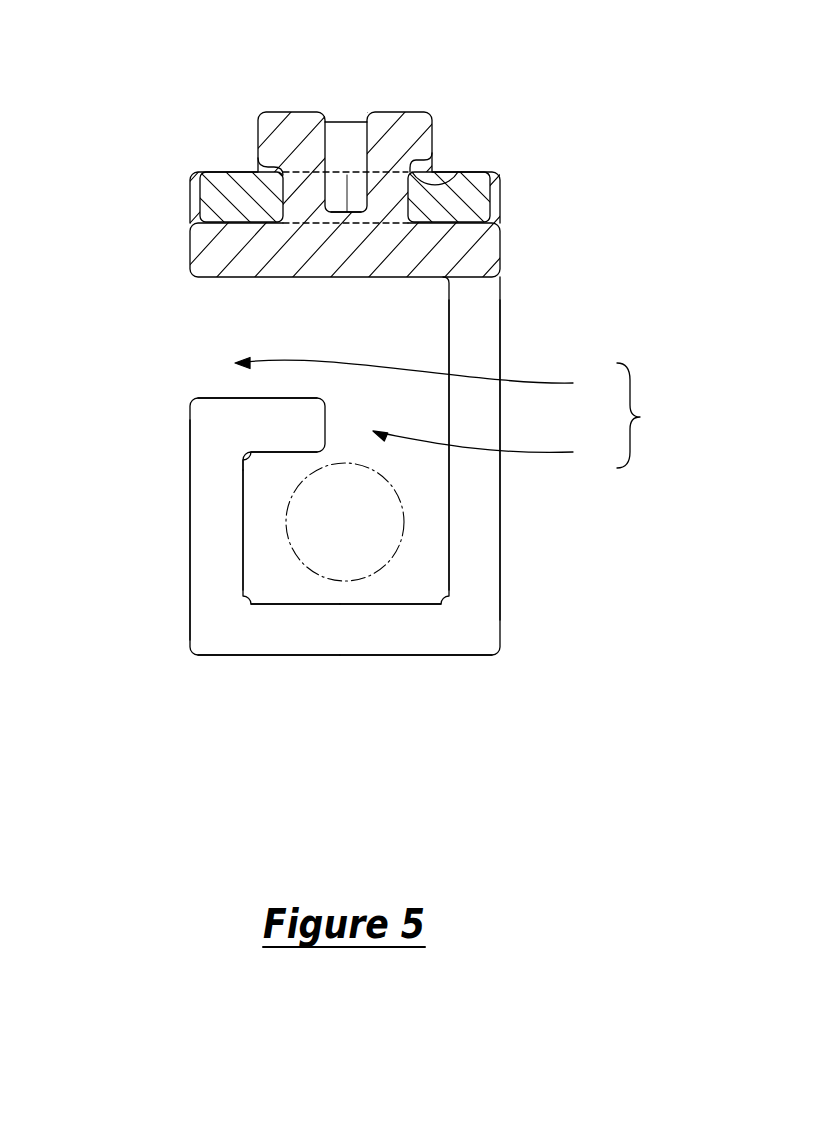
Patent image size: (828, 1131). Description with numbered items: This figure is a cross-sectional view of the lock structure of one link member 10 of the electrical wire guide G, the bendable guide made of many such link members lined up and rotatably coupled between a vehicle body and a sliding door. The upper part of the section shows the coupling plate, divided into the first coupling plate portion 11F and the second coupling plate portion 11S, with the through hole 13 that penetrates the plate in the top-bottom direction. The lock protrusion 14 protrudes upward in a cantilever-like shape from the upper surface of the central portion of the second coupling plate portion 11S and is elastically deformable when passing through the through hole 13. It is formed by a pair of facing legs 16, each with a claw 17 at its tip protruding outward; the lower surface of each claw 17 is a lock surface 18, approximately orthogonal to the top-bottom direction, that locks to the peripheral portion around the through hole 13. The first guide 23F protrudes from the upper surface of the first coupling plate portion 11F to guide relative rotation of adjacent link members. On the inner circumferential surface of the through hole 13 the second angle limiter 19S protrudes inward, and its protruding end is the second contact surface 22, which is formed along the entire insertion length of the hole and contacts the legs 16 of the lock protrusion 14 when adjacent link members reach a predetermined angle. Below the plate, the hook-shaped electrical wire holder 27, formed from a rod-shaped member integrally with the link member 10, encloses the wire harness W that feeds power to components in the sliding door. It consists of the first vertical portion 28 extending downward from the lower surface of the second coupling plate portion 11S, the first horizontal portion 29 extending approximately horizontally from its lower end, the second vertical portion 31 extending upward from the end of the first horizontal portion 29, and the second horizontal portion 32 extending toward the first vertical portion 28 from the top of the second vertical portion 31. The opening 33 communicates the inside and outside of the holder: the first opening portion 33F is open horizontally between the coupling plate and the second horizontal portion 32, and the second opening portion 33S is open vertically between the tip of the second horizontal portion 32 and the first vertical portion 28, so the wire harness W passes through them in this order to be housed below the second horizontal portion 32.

The link member 10 is at (482, 310).
The first coupling plate portion 11F is at (222, 203).
The second coupling plate portion 11S is at (245, 262).
The through hole 13 is at (292, 190).
The lock protrusion 14 is at (385, 123).
The leg 16 is at (392, 193).
The claw 17 is at (415, 135).
The lock surface 18 is at (452, 172).
The second angle limiter 19S is at (335, 200).
The second contact surface 22 is at (353, 203).
The first guide 23F is at (347, 136).
The electrical wire holder 27 is at (425, 635).
The first vertical portion 28 is at (485, 513).
The first horizontal portion 29 is at (318, 648).
The second vertical portion 31 is at (213, 537).
The second horizontal portion 32 is at (290, 414).
The opening 33 is at (645, 415).
The first opening portion 33F is at (428, 380).
The second opening portion 33S is at (497, 449).
The wire harness W is at (350, 568).
The electrical wire guide G is at (520, 136).